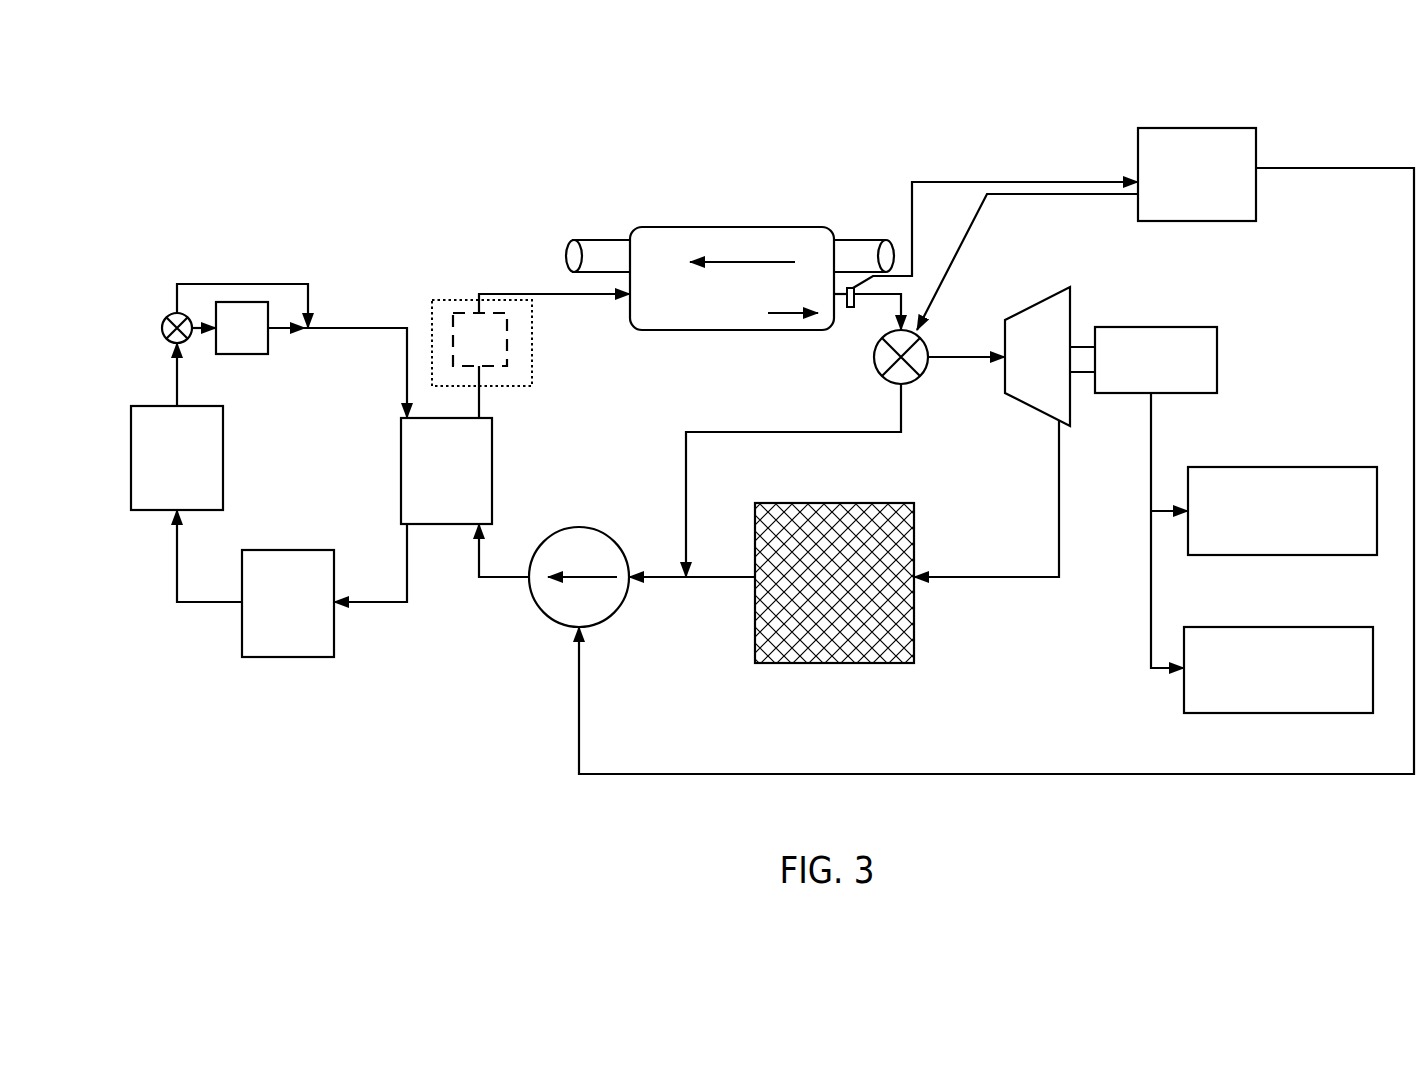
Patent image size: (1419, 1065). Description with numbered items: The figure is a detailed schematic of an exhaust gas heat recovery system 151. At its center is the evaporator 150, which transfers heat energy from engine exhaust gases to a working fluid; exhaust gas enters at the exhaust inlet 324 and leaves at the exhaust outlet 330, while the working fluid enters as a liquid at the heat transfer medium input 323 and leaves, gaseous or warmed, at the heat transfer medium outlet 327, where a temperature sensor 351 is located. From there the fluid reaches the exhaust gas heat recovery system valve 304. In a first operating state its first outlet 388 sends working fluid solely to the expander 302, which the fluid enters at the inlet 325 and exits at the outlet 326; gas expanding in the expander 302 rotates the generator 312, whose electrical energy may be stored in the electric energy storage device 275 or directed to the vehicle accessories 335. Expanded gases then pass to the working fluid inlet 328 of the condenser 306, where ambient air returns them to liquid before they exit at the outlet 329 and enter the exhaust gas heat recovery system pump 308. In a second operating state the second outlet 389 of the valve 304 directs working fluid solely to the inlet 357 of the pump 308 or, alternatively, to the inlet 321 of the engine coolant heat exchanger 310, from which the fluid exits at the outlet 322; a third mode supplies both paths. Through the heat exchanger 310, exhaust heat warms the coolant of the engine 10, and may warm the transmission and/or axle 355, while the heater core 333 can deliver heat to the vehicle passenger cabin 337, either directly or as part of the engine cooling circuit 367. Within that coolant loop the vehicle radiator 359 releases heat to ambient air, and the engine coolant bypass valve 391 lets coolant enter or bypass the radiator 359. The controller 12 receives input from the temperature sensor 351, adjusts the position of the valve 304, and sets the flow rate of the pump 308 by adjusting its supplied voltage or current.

The exhaust gas heat recovery system 151 is at (360, 142).
The engine cooling circuit 367 is at (270, 263).
The engine coolant bypass valve 391 is at (168, 316).
The vehicle radiator 359 is at (242, 328).
The engine 10 is at (164, 469).
The transmission and/or axle 355 is at (268, 613).
The engine coolant heat exchanger 310 is at (427, 481).
The vehicle passenger cabin 337 is at (452, 300).
The heater core 333 is at (460, 349).
The outlet 322 is at (482, 413).
The inlet 321 is at (484, 527).
The heat transfer medium input 323 is at (627, 292).
The evaporator 150 is at (752, 227).
The exhaust outlet 330 is at (618, 251).
The exhaust inlet 324 is at (848, 253).
The heat transfer medium outlet 327 is at (843, 316).
The temperature sensor 351 is at (851, 308).
The controller 12 is at (1086, 229).
The exhaust gas heat recovery system valve 304 is at (915, 375).
The first outlet 388 is at (926, 365).
The second outlet 389 is at (905, 384).
The inlet 325 is at (1005, 346).
The expander 302 is at (1046, 300).
The outlet 326 is at (1052, 421).
The generator 312 is at (1136, 371).
The condenser 306 is at (918, 642).
The working fluid inlet 328 is at (922, 572).
The outlet 329 is at (746, 577).
The inlet 357 is at (629, 566).
The exhaust gas heat recovery system pump 308 is at (609, 620).
The electric energy storage device 275 is at (1306, 555).
The vehicle accessories 335 is at (1320, 713).